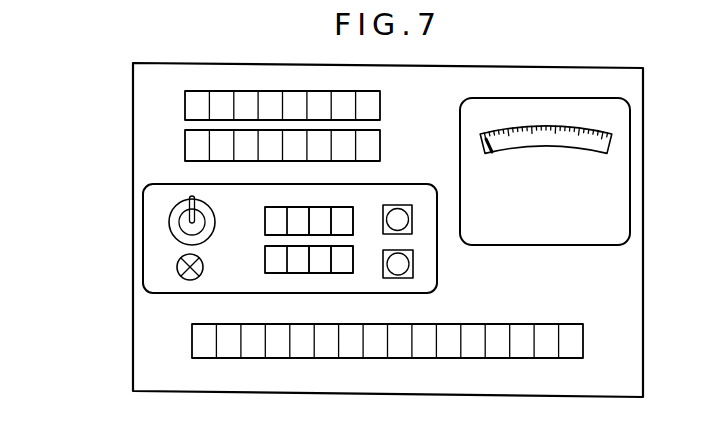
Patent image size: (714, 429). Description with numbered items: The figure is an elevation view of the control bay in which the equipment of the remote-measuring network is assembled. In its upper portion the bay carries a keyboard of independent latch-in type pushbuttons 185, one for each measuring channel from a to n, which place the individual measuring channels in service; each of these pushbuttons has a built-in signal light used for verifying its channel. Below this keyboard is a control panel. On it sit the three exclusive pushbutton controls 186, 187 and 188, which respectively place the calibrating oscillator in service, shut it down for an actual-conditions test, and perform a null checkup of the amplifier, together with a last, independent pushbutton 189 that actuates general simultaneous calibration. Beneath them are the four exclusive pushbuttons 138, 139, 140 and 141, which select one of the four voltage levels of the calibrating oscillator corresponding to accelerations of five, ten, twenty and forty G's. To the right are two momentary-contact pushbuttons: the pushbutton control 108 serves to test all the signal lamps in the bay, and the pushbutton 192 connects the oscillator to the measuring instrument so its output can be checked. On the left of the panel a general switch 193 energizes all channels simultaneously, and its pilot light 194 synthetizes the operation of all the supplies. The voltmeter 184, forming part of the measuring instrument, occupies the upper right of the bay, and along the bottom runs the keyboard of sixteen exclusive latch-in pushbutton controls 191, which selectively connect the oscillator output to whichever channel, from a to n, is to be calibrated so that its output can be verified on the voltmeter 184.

The latch-in type pushbuttons 185 is at (178, 105).
The pushbutton control 186 is at (273, 215).
The pushbutton control 187 is at (294, 214).
The pushbutton control 188 is at (319, 215).
The independent pushbutton 189 is at (342, 213).
The exclusive pushbutton 138 is at (276, 268).
The exclusive pushbutton 139 is at (298, 266).
The exclusive pushbutton 140 is at (318, 267).
The exclusive pushbutton 141 is at (347, 267).
The momentary-contact pushbutton control 108 is at (398, 220).
The momentary-contact pushbutton 192 is at (398, 264).
The general switch 193 is at (176, 223).
The pilot light 194 is at (177, 265).
The voltmeter 184 is at (566, 193).
The latch-in type pushbutton controls 191 is at (408, 361).